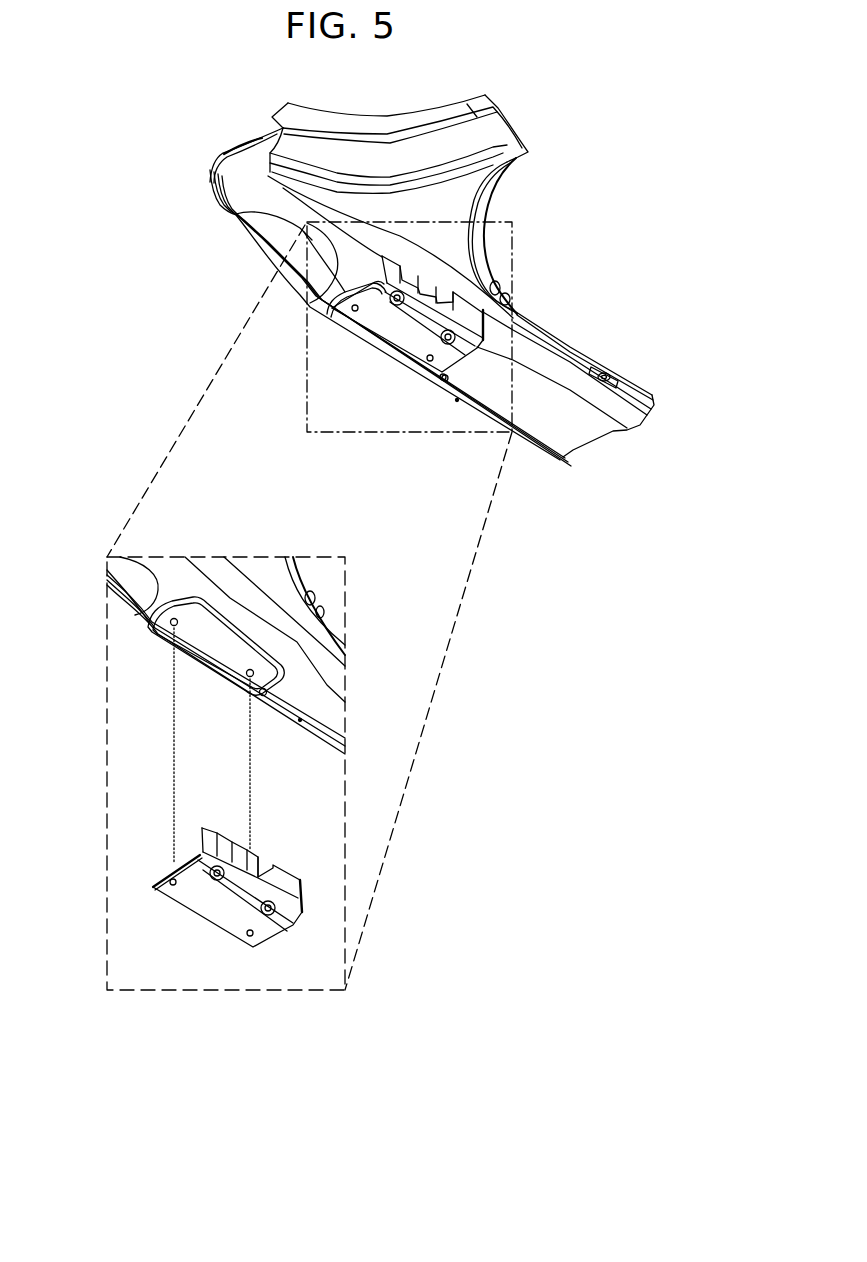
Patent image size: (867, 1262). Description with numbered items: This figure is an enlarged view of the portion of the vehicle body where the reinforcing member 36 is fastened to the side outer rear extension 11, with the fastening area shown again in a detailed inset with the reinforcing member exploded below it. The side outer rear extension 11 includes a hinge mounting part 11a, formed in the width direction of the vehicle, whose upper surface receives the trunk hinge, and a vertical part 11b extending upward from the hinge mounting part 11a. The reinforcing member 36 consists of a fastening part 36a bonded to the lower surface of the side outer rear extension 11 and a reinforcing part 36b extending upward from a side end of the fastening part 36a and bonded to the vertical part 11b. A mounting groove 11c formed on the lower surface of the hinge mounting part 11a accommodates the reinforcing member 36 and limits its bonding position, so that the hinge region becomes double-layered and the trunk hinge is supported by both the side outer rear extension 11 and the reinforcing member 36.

The side outer rear extension 11 is at (666, 506).
The hinge mounting part 11a is at (487, 388).
The vertical part 11b is at (537, 365).
The mounting groove 11c is at (212, 647).
The reinforcing member 36 is at (383, 328).
The fastening part 36a is at (220, 918).
The reinforcing part 36b is at (293, 893).